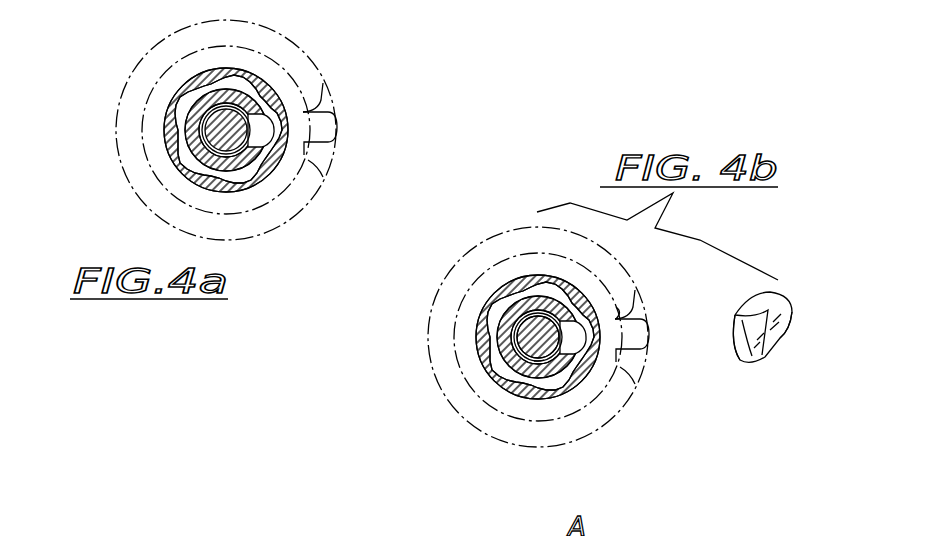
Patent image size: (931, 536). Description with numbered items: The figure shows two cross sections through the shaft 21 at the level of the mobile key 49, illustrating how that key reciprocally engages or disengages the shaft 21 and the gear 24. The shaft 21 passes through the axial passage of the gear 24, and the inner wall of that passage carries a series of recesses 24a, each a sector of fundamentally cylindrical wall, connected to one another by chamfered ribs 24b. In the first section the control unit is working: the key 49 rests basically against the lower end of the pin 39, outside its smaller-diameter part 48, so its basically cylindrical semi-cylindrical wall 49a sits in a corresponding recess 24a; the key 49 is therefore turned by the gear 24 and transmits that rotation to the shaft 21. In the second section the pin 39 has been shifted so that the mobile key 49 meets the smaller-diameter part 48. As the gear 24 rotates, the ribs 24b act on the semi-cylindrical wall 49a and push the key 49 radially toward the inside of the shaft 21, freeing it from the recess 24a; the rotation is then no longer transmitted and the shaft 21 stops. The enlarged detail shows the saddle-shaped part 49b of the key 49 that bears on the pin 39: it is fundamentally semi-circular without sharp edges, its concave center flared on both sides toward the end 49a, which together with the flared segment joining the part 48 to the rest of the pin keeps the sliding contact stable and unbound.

In FIG. 4a, the shaft 21 is at (162, 154).
In FIG. 4b, the shaft 21 is at (503, 281).
In FIG. 4a, the gear 24 is at (254, 130).
In FIG. 4b, the gear 24 is at (523, 337).
In FIG. 4a, the recess 24a is at (354, 145).
In FIG. 4b, the recess 24a is at (663, 360).
In FIG. 4a, the chamfered rib 24b is at (185, 103).
In FIG. 4b, the chamfered rib 24b is at (491, 319).
In FIG. 4a, the pin 39 is at (271, 158).
In FIG. 4b, the pin 39 is at (473, 337).
In FIG. 4b, the smaller-diameter part 48 is at (463, 356).
In FIG. 4a, the mobile key 49 is at (321, 114).
In FIG. 4b, the mobile key 49 is at (775, 355).
In FIG. 4b, the semi-cylindrical wall 49a is at (792, 305).
In FIG. 4b, the saddle-shaped part 49b is at (738, 352).